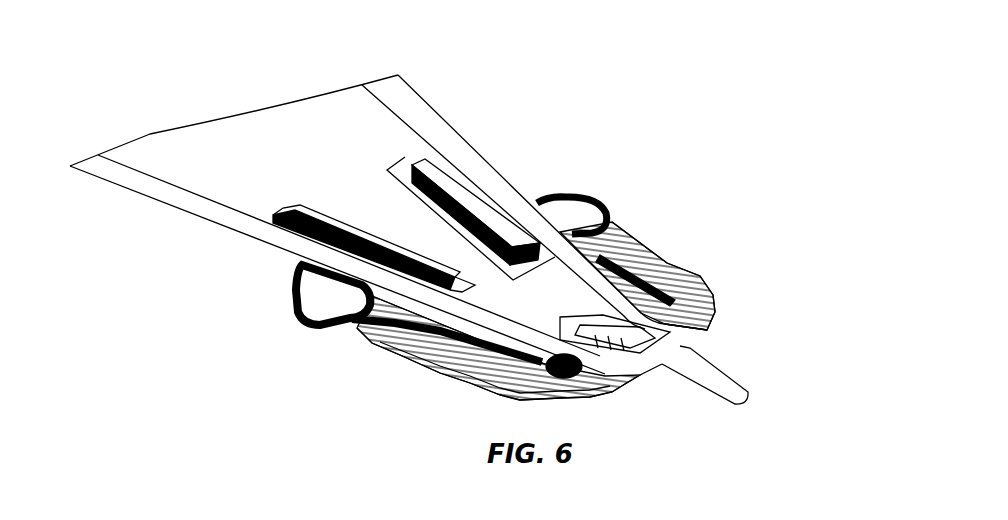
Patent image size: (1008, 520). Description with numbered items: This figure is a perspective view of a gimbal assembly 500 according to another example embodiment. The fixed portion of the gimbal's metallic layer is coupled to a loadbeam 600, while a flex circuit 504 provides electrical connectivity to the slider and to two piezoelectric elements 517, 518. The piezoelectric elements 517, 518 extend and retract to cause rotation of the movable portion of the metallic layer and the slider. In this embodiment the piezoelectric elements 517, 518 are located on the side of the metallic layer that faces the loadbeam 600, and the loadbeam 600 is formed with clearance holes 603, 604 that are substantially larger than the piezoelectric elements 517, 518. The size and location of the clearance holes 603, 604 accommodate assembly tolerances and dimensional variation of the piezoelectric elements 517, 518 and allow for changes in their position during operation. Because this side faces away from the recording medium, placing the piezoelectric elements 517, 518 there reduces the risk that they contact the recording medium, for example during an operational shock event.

The gimbal assembly 500 is at (648, 179).
The flex circuit 504 is at (673, 282).
The piezoelectric element 517 is at (470, 175).
The piezoelectric element 518 is at (310, 241).
The loadbeam 600 is at (146, 196).
The clearance hole 603 is at (406, 171).
The clearance hole 604 is at (462, 287).